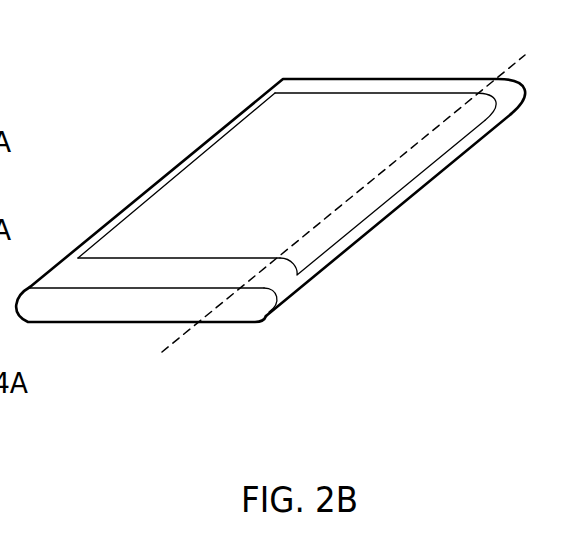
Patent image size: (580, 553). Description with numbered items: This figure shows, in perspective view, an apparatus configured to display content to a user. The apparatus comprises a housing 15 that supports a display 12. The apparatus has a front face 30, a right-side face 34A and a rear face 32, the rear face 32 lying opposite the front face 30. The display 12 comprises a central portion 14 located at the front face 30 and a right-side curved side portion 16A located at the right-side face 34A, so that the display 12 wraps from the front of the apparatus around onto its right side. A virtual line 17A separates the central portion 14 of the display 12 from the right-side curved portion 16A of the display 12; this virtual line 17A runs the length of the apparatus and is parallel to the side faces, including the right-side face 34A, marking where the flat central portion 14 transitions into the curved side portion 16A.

The front face 30 is at (383, 73).
The right-side face 34A is at (424, 204).
The rear face 32 is at (112, 330).
The housing 15 is at (68, 278).
The display 12 is at (138, 235).
The central portion 14 is at (230, 182).
The right-side curved side portion 16A is at (345, 223).
The virtual line 17A is at (162, 353).